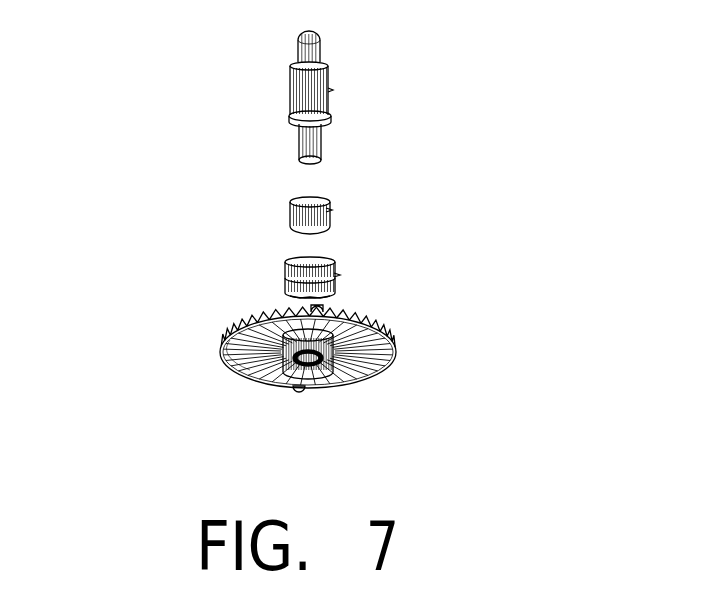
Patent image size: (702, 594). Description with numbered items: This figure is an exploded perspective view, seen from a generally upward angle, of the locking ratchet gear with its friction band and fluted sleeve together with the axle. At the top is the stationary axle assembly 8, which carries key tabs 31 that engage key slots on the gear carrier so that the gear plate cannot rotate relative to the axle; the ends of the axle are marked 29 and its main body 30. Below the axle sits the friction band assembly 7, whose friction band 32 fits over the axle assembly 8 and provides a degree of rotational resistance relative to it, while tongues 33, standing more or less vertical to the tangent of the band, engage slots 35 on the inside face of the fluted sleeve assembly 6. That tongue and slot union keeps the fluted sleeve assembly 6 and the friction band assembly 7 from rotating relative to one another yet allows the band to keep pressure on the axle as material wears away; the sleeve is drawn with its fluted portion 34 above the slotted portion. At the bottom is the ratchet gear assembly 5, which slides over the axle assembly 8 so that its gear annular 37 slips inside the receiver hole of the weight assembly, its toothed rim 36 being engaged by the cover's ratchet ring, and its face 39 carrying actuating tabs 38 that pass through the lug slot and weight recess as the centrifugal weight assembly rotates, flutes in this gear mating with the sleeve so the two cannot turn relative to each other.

The ratchet gear assembly 5 is at (394, 337).
The fluted sleeve assembly 6 is at (340, 275).
The friction band assembly 7 is at (332, 210).
The axle assembly 8 is at (333, 90).
The shaft pin 29 is at (298, 45).
The shaft body 30 is at (290, 80).
The key tabs 31 is at (292, 121).
The friction band 32 is at (290, 208).
The tongues 33 is at (296, 232).
The hub sleeve 34 is at (285, 274).
The slots 35 is at (295, 298).
The saw teeth 36 is at (362, 310).
The gear annular 37 is at (335, 362).
The actuating tabs 38 is at (310, 390).
The disk surface 39 is at (260, 366).